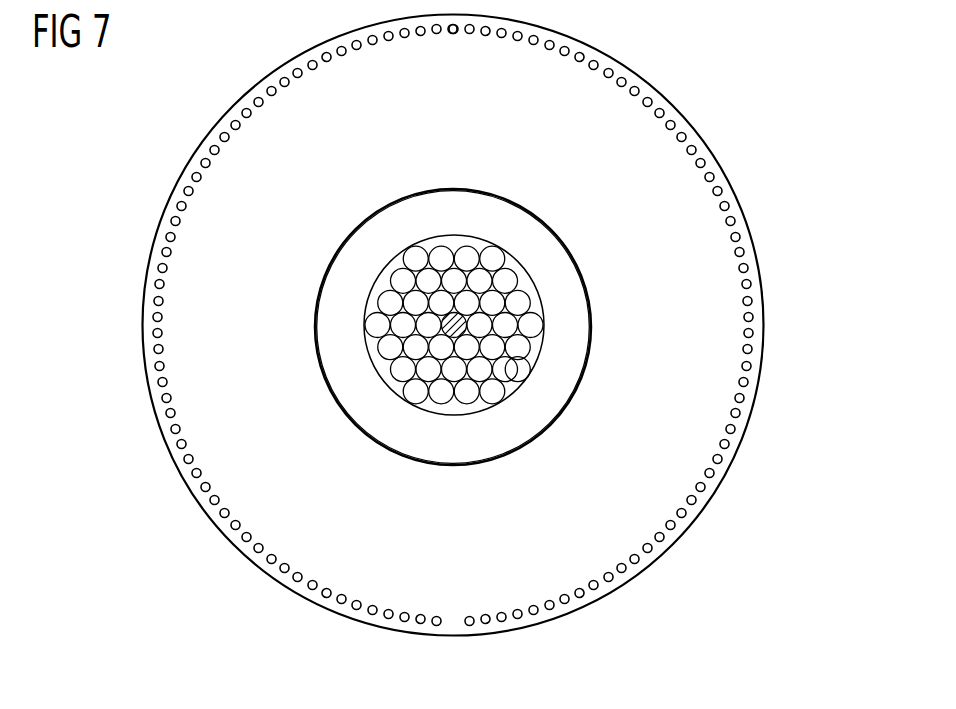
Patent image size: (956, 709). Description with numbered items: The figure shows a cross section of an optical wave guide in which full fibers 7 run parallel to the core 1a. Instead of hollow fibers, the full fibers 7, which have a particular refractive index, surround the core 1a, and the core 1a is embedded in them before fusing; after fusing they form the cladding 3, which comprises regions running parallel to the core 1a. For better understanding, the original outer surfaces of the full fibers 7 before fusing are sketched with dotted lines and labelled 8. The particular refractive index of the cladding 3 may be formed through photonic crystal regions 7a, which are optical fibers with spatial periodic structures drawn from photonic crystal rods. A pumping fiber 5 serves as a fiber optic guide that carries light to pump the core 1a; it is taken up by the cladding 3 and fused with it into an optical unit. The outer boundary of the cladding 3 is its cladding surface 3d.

The core 1a is at (441, 325).
The cladding 3 is at (584, 261).
The cladding surface 3d is at (523, 443).
The pumping fiber 5 is at (504, 297).
The full fibers 7 is at (534, 327).
The photonic crystal regions 7a is at (492, 259).
The original outer surfaces of the full fibers 8 is at (517, 363).